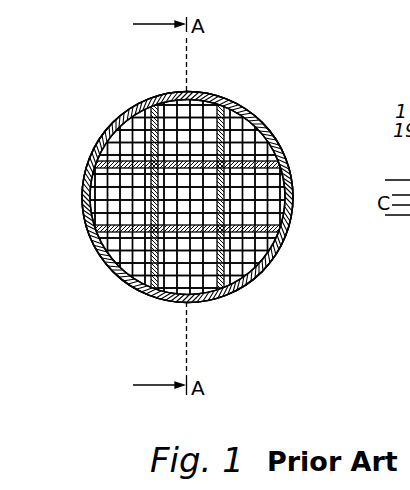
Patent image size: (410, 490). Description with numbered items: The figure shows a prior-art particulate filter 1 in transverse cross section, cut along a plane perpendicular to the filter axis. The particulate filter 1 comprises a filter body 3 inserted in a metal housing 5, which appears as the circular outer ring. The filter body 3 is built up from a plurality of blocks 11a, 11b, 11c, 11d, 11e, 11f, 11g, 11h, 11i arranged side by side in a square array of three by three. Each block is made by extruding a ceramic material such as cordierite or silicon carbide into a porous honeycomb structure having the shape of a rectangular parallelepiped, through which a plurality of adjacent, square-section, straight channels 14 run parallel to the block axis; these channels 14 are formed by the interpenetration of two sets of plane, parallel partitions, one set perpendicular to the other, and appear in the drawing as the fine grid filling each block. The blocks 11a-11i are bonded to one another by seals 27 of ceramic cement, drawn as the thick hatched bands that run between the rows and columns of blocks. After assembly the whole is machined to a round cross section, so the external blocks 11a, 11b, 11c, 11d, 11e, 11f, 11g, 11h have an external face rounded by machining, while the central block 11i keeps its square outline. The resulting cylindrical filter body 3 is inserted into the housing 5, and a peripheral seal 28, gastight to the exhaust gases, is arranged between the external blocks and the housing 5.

The particulate filter 1 is at (266, 339).
The filter body 3 is at (121, 196).
The metal housing 5 is at (288, 156).
The block 11a is at (118, 126).
The block 11b is at (208, 93).
The block 11c is at (261, 123).
The block 11d is at (283, 233).
The block 11e is at (263, 267).
The block 11f is at (146, 278).
The block 11g is at (107, 267).
The block 11h is at (90, 237).
The block 11i is at (128, 255).
The channel 14 is at (166, 94).
The seal 27 is at (103, 147).
The peripheral seal 28 is at (129, 109).